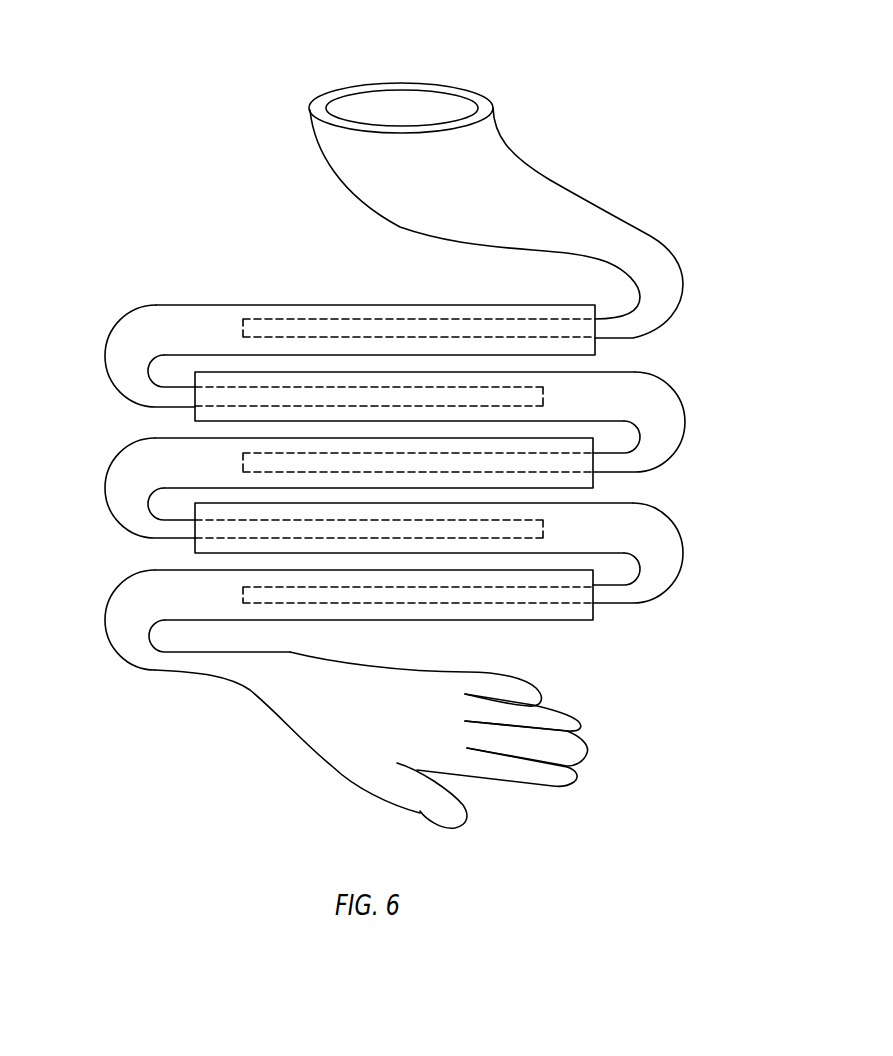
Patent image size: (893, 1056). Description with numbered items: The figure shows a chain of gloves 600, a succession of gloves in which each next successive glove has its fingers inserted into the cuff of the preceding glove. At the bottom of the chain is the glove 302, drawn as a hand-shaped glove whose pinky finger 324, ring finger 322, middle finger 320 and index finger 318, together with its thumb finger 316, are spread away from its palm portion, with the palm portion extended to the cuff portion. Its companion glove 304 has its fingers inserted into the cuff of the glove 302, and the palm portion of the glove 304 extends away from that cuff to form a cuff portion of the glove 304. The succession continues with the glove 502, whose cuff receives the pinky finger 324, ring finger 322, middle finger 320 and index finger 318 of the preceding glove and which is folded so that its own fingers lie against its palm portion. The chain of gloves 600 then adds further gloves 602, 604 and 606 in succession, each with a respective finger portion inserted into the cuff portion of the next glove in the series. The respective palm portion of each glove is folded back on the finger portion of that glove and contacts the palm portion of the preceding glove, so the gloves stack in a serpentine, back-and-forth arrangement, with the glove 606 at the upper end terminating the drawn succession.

The chain of gloves 600 is at (687, 56).
The glove 606 is at (667, 243).
The glove 604 is at (117, 320).
The glove 602 is at (683, 395).
The glove 502 is at (102, 493).
The glove 302 is at (683, 545).
The glove 304 is at (173, 673).
The pinky finger 324 is at (547, 694).
The ring finger 322 is at (580, 725).
The middle finger 320 is at (587, 753).
The index finger 318 is at (573, 782).
The thumb finger 316 is at (470, 820).